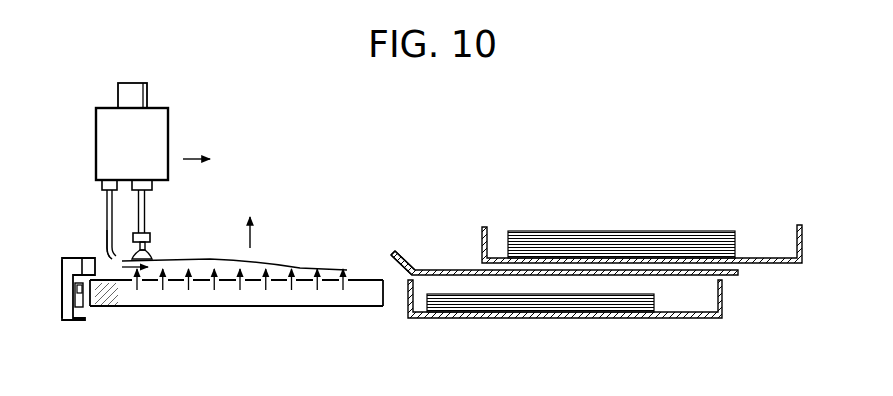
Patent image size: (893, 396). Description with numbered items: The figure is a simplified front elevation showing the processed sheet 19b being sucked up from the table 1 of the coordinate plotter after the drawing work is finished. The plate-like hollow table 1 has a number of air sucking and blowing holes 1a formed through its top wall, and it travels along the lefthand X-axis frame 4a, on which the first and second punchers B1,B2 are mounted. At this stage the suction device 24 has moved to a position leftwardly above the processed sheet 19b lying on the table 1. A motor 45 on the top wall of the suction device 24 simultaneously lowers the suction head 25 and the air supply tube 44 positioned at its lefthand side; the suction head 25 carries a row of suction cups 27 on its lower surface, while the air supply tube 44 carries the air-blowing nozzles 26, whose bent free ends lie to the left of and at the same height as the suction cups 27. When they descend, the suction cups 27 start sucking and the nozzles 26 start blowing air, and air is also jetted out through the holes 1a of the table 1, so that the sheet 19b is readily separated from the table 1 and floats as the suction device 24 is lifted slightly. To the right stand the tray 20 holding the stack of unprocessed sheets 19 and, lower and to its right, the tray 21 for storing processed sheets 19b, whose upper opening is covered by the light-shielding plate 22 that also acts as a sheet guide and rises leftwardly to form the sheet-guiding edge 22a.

The table 1 is at (303, 309).
The air sucking and blowing holes 1a is at (240, 284).
The lefthand X-axis frame 4a is at (85, 320).
The first and second punchers B1,B2 is at (59, 285).
The unprocessed sheets 19 is at (692, 231).
The processed sheet 19b is at (307, 268).
The tray for unprocessed sheets 20 is at (797, 229).
The tray for processed sheets 21 is at (722, 297).
The light-shielding plate 22 is at (458, 268).
The sheet-guiding edge 22a is at (405, 256).
The suction device 24 is at (171, 130).
The suction head 25 is at (149, 233).
The air-blowing nozzles 26 is at (106, 255).
The suction cups 27 is at (153, 254).
The air supply tube 44 is at (105, 213).
The motor 45 is at (147, 93).